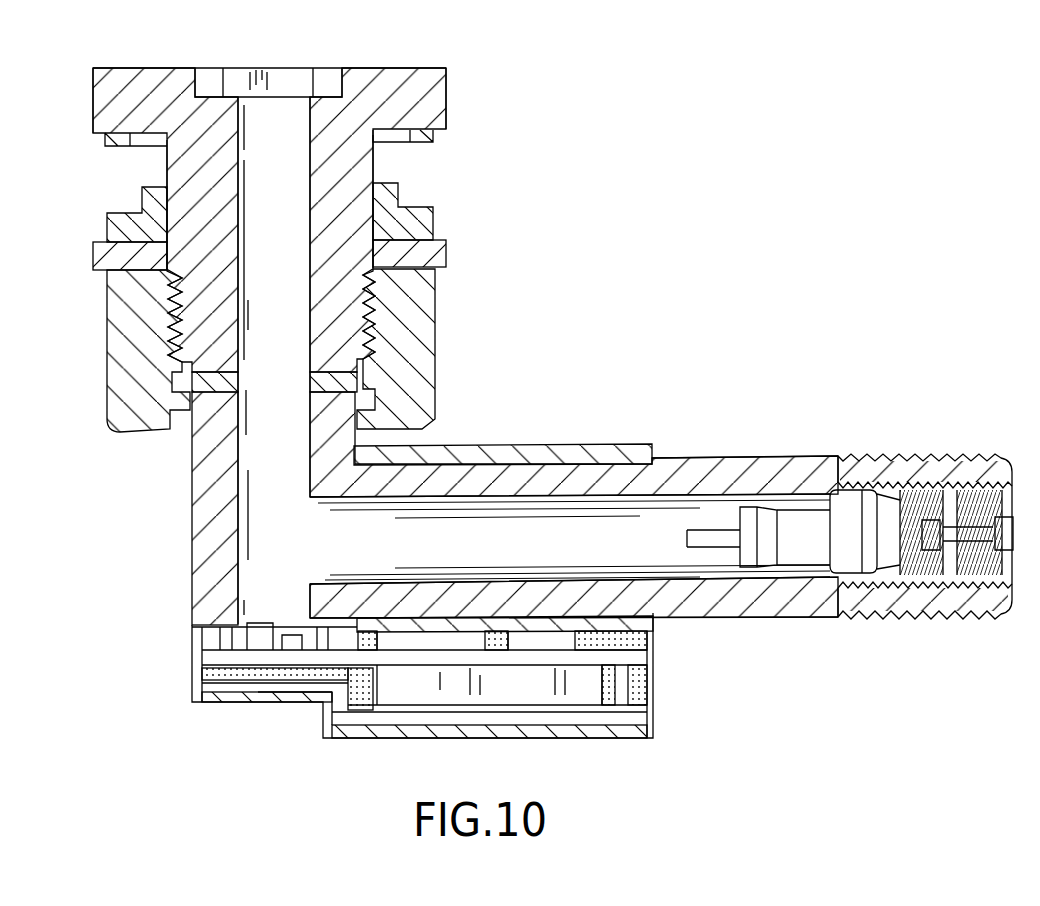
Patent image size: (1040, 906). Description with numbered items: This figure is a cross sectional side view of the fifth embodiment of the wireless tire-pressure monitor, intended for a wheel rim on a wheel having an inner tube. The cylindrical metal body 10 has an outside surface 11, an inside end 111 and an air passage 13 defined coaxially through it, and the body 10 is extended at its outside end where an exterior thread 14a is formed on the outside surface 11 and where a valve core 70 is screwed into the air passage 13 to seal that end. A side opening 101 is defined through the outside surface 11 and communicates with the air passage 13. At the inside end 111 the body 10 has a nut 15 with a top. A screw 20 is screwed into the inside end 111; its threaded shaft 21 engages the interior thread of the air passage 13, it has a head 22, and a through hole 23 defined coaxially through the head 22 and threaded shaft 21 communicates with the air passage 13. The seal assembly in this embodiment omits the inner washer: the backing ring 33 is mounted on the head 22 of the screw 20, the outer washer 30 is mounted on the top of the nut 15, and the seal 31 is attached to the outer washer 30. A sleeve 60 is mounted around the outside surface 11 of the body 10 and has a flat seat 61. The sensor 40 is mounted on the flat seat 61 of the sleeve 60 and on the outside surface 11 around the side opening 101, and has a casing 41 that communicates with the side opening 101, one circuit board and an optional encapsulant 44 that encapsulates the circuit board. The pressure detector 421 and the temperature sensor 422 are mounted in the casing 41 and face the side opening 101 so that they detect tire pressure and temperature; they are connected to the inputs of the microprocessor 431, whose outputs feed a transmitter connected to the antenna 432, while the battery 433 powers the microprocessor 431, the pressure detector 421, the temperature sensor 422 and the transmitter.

The body 10 is at (606, 492).
The outside surface 11 is at (800, 455).
The air passage 13 is at (245, 484).
The exterior thread 14a is at (946, 455).
The nut 15 is at (425, 304).
The screw 20 is at (452, 57).
The threaded shaft 21 is at (362, 175).
The head 22 is at (441, 88).
The through hole 23 is at (306, 125).
The outer washer 30 is at (433, 251).
The seal 31 is at (425, 228).
The backing ring 33 is at (430, 132).
The sensor 40 is at (400, 699).
The casing 41 is at (650, 688).
The encapsulant 44 is at (637, 705).
The sleeve 60 is at (548, 449).
The flat seat 61 is at (645, 631).
The valve core 70 is at (853, 525).
The side opening 101 is at (245, 625).
The inside end 111 is at (186, 380).
The pressure detector 421 is at (260, 645).
The temperature sensor 422 is at (292, 645).
The microprocessor 431 is at (445, 640).
The antenna 432 is at (552, 720).
The battery 433 is at (528, 690).